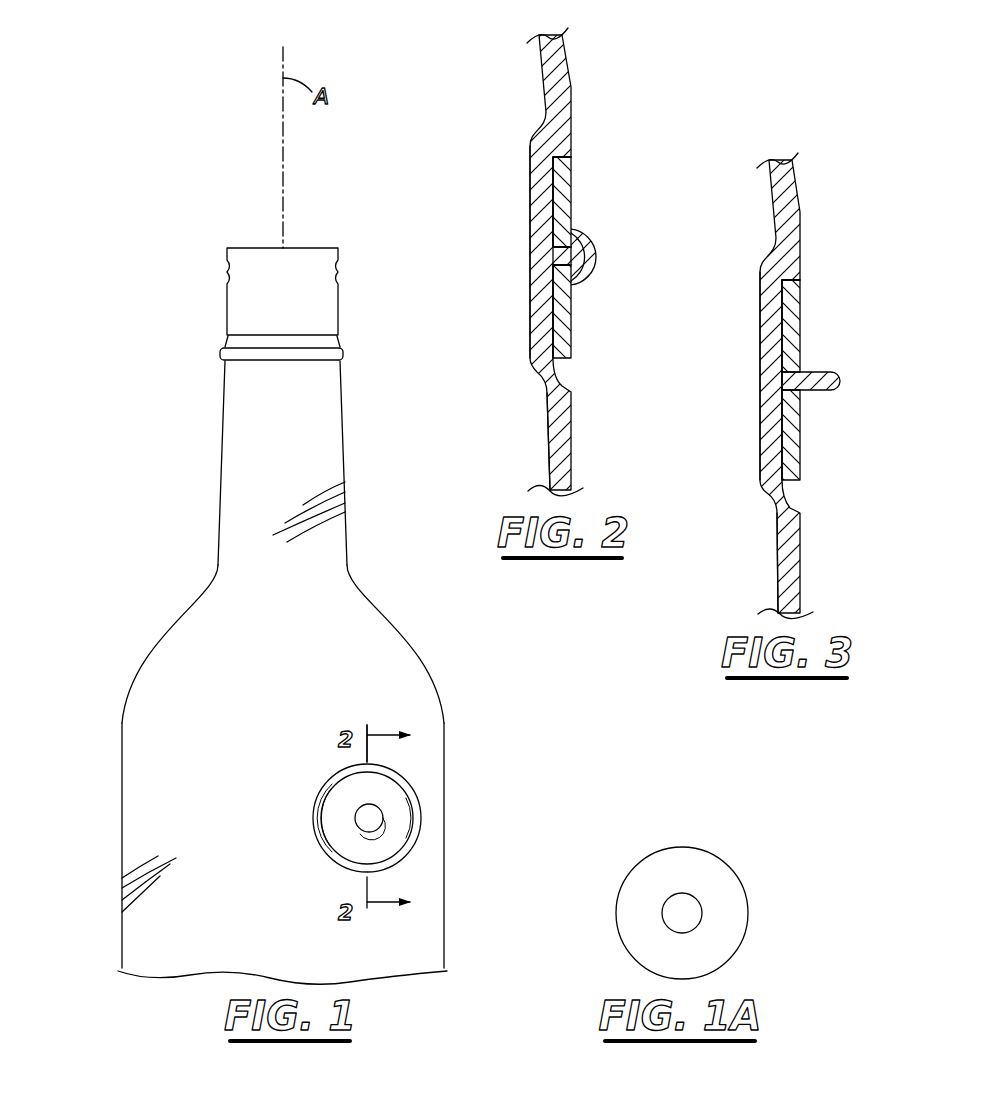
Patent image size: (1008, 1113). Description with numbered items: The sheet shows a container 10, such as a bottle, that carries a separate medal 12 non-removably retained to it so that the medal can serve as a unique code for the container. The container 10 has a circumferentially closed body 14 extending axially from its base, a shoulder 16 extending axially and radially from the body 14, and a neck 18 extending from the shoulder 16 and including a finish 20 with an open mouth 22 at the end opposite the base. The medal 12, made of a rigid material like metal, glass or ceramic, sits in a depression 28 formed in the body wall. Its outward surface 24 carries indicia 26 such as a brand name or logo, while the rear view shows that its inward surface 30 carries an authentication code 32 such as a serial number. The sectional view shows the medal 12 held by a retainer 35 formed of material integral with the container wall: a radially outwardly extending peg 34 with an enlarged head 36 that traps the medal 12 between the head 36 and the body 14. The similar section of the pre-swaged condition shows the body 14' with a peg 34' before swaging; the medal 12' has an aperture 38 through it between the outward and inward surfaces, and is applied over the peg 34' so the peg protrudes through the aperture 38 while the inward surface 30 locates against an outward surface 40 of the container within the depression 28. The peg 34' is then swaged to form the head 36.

In FIG. 1, the container 10 is at (190, 218).
In FIG. 2, the container 10 is at (500, 88).
In FIG. 3, the container 10 is at (748, 192).
In FIG. 1, the medal 12 is at (400, 818).
In FIG. 1A, the medal 12 is at (717, 913).
In FIG. 2, the medal 12 is at (588, 318).
In FIG. 3, the medal 12' is at (824, 442).
In FIG. 1, the body 14 is at (251, 853).
In FIG. 2, the body 14 is at (585, 262).
In FIG. 3, the body 14' is at (818, 386).
In FIG. 1, the shoulder 16 is at (170, 610).
In FIG. 1, the neck 18 is at (192, 452).
In FIG. 1, the finish 20 is at (208, 312).
In FIG. 1, the open mouth 22 is at (320, 246).
In FIG. 2, the outward surface 24 is at (572, 176).
In FIG. 3, the outward surface 24 is at (800, 306).
In FIG. 1, the indicia 26 is at (384, 776).
In FIG. 1, the depression 28 is at (412, 790).
In FIG. 2, the depression 28 is at (558, 149).
In FIG. 3, the depression 28 is at (790, 273).
In FIG. 1A, the inward surface 30 is at (735, 892).
In FIG. 2, the inward surface 30 is at (553, 300).
In FIG. 3, the inward surface 30 is at (782, 441).
In FIG. 1A, the authentication code 32 is at (640, 935).
In FIG. 2, the peg 34 is at (596, 266).
In FIG. 3, the peg 34' is at (829, 396).
In FIG. 1, the retainer 35 is at (408, 810).
In FIG. 2, the retainer 35 is at (612, 248).
In FIG. 1, the enlarged head 36 is at (385, 820).
In FIG. 2, the enlarged head 36 is at (570, 243).
In FIG. 3, the aperture 38 is at (787, 388).
In FIG. 3, the outward surface 40 is at (783, 345).